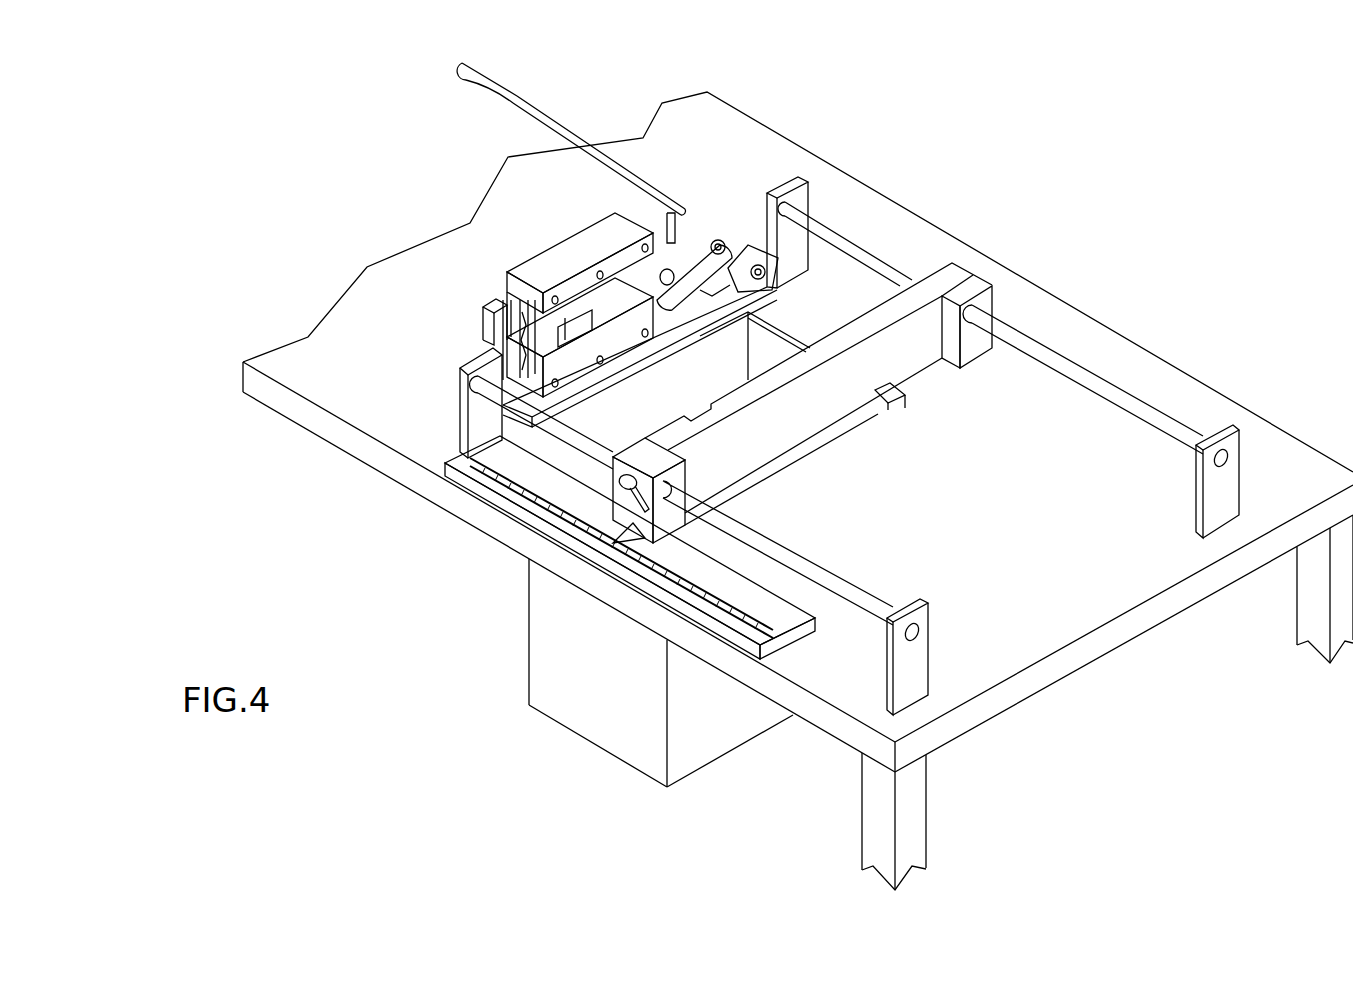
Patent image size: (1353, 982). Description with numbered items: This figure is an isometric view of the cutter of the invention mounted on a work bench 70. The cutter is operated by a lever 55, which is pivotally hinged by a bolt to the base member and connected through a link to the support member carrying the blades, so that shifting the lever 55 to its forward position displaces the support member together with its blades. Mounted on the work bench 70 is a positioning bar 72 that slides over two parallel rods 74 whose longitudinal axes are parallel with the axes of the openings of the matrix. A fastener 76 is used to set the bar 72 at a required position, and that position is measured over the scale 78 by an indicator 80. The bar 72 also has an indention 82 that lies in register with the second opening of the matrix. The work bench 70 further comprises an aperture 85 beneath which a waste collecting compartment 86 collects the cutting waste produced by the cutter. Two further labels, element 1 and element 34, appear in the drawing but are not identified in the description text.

The cutting apparatus 1 is at (538, 236).
The die plate 34 is at (487, 333).
The lever 55 is at (550, 118).
The work bench 70 is at (1183, 338).
The positioning bar 72 is at (700, 403).
The parallel rods 74 is at (1028, 340).
The fastener 76 is at (605, 485).
The scale 78 is at (728, 612).
The indicator 80 is at (632, 548).
The indention 82 is at (858, 327).
The aperture 85 is at (858, 413).
The waste collecting compartment 86 is at (545, 612).